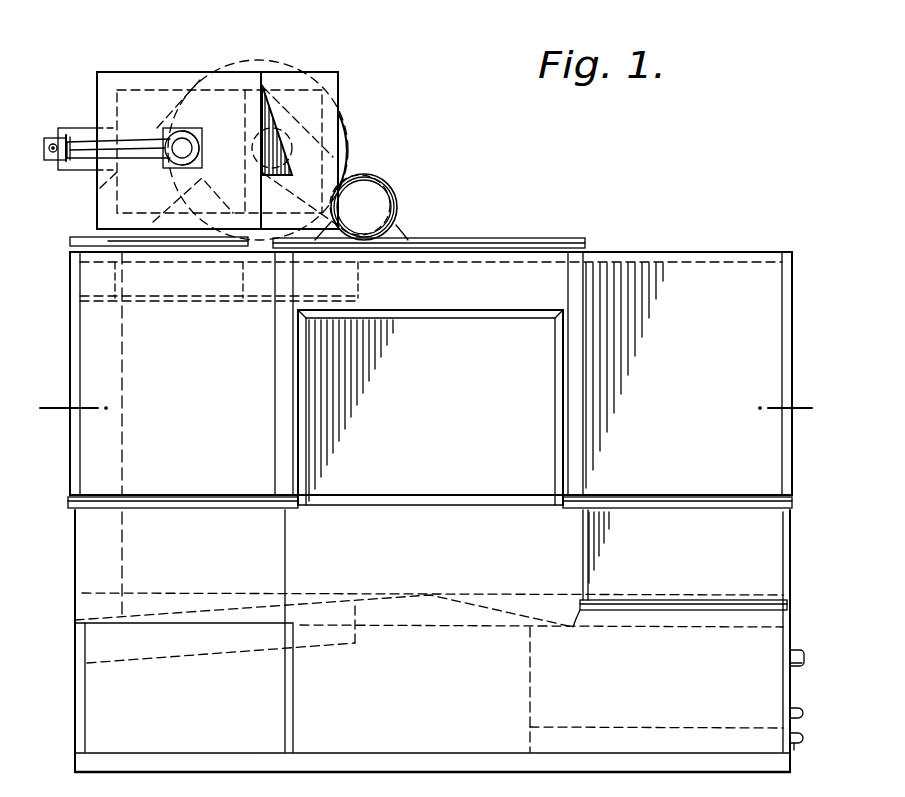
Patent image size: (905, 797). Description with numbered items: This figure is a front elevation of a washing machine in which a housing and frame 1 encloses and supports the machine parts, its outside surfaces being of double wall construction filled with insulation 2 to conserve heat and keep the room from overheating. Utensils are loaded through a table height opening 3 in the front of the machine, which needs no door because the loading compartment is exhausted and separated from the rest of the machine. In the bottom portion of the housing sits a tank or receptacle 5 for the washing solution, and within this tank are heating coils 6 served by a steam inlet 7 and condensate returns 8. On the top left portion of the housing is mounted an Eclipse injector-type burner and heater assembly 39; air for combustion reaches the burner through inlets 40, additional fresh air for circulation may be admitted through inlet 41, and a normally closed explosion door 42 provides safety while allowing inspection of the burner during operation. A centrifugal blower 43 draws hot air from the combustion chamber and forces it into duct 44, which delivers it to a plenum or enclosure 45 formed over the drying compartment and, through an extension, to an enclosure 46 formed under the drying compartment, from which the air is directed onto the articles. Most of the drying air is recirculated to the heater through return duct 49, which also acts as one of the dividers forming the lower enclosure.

The housing and frame 1 is at (677, 246).
The insulation 2 is at (74, 466).
The table height opening 3 is at (467, 345).
The tank or receptacle 5 is at (715, 712).
The heating coils 6 is at (48, 400).
The steam inlet 7 is at (820, 657).
The condensate returns 8 is at (818, 713).
The injector-type burner and heater assembly 39 is at (372, 24).
The inlets 40 is at (186, 132).
The inlet 41 is at (72, 138).
The explosion door 42 is at (276, 126).
The centrifugal blower 43 is at (345, 142).
The duct 44 is at (87, 318).
The plenum or enclosure 45 is at (106, 284).
The enclosure 46 is at (190, 656).
The return duct 49 is at (188, 284).